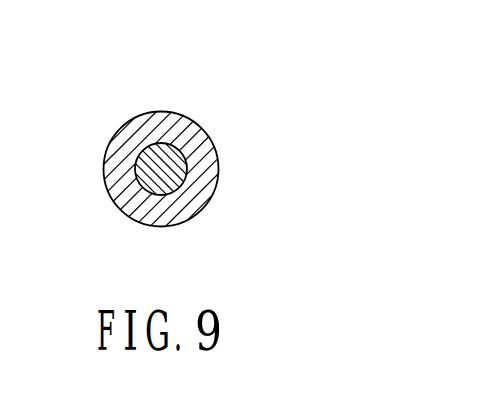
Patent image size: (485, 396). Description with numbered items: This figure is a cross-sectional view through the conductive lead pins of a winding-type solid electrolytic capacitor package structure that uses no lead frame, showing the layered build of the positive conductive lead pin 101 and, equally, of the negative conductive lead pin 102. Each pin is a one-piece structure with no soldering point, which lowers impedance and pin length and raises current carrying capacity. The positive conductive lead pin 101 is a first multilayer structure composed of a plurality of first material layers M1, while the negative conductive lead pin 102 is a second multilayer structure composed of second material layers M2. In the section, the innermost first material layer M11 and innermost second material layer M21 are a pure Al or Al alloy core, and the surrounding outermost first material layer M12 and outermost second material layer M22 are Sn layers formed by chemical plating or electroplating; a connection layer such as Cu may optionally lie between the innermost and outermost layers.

The positive conductive lead pin 101 is at (244, 121).
The negative conductive lead pin 102 is at (138, 48).
The first material layers M1 is at (280, 169).
The second material layers M2 is at (358, 128).
The innermost first material layer M11 is at (244, 161).
The innermost second material layer M21 is at (163, 156).
The outermost first material layer M12 is at (229, 169).
The outermost second material layer M22 is at (192, 190).